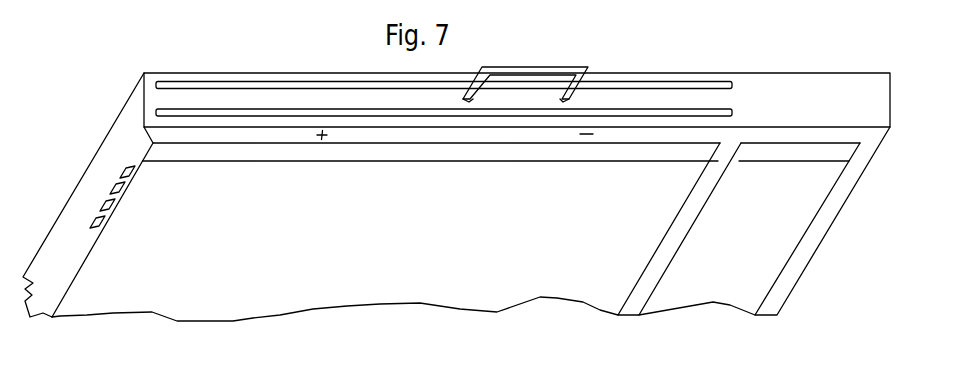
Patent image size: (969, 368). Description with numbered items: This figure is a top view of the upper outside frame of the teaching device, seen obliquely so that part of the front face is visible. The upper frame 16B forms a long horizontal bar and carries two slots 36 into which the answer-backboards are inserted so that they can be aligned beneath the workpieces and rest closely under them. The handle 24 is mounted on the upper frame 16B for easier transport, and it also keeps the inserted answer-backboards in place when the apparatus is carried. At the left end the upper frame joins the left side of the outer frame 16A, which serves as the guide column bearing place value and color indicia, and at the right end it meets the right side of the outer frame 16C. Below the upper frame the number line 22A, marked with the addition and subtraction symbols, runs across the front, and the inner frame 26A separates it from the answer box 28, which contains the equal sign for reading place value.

The left side of the outer frame 16A is at (112, 183).
The upper frame 16B is at (173, 133).
The right side of the outer frame 16C is at (868, 132).
The number line 22A is at (277, 150).
The handle 24 is at (497, 70).
The inner frame 26A is at (731, 142).
The answer box 28 is at (784, 151).
The slots 36 is at (707, 110).